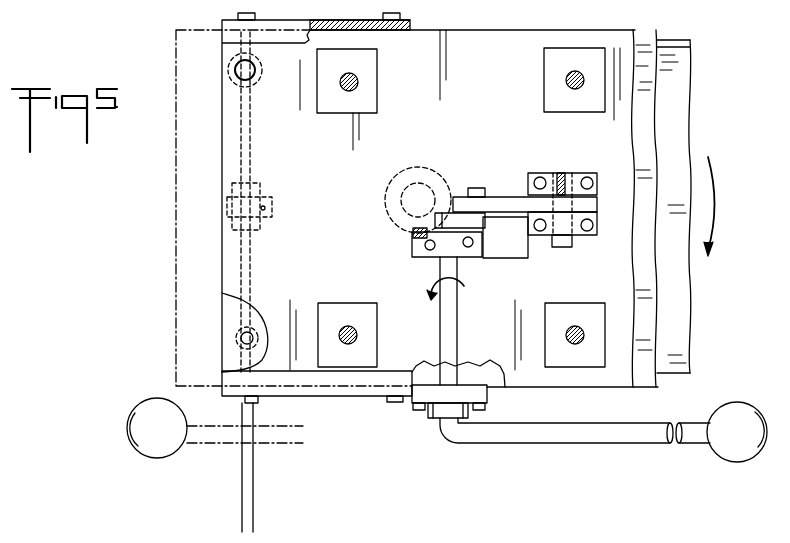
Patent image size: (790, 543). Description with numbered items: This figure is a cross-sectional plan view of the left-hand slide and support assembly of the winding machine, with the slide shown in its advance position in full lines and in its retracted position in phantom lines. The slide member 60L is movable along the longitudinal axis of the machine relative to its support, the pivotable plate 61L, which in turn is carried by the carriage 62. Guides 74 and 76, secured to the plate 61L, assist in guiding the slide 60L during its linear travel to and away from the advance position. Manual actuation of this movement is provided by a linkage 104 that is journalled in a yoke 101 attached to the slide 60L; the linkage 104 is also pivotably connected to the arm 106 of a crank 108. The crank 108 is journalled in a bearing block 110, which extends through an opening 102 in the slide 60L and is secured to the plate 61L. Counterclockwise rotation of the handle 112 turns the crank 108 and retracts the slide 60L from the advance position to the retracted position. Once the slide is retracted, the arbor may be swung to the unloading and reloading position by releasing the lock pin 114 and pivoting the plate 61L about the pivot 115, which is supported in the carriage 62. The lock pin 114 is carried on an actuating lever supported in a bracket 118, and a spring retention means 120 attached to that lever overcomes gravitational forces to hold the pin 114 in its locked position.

The slide member 60L is at (176, 214).
The pivotable plate 61L is at (656, 40).
The carriage 62 is at (688, 48).
The guide 74 is at (386, 398).
The guide 76 is at (412, 25).
The yoke 101 is at (592, 236).
The opening 102 is at (507, 257).
The linkage 104 is at (505, 198).
The arm 106 is at (455, 216).
The crank 108 is at (450, 310).
The bearing block 110 is at (414, 252).
The handle 112 is at (467, 390).
The lock pin 114 is at (241, 338).
The pivot 115 is at (418, 203).
The bracket 118 is at (260, 228).
The spring retention means 120 is at (262, 69).